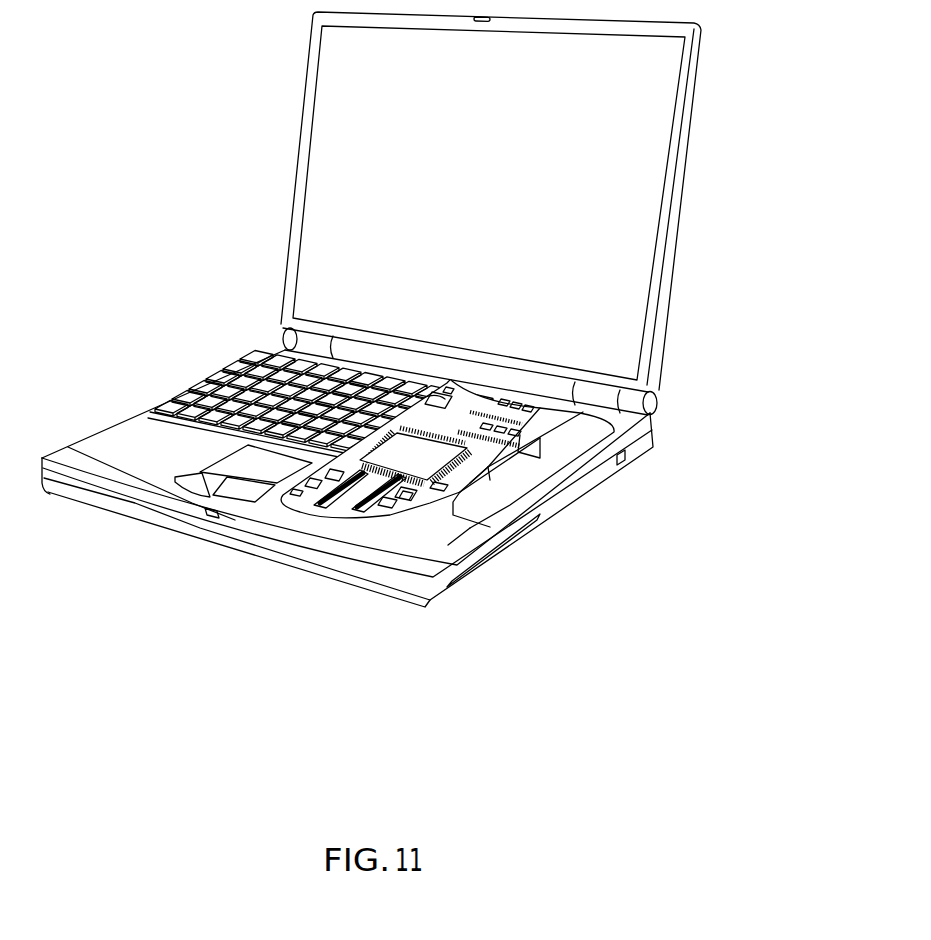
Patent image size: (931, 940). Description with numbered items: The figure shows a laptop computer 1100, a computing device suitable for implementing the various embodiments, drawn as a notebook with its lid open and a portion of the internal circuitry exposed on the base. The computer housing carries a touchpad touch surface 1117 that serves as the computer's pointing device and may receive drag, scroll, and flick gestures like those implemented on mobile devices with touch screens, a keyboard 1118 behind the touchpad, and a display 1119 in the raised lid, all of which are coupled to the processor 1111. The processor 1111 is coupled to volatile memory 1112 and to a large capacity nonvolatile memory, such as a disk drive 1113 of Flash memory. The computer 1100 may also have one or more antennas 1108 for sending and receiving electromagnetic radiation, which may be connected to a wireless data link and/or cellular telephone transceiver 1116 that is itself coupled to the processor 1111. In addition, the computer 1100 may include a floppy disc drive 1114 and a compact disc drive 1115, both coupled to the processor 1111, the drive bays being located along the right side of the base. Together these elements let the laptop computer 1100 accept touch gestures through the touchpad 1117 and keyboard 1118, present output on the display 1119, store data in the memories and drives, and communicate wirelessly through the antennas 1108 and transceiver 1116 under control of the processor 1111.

The laptop computer 1100 is at (730, 153).
The antennas 1108 is at (490, 470).
The processor 1111 is at (440, 460).
The volatile memory 1112 is at (353, 497).
The disk drive 1113 is at (457, 530).
The floppy disc drive 1114 is at (477, 490).
The compact disc (CD) drive 1115 is at (565, 443).
The cellular telephone transceiver 1116 is at (535, 505).
The touchpad touch surface 1117 is at (233, 467).
The keyboard 1118 is at (193, 398).
The display 1119 is at (648, 338).